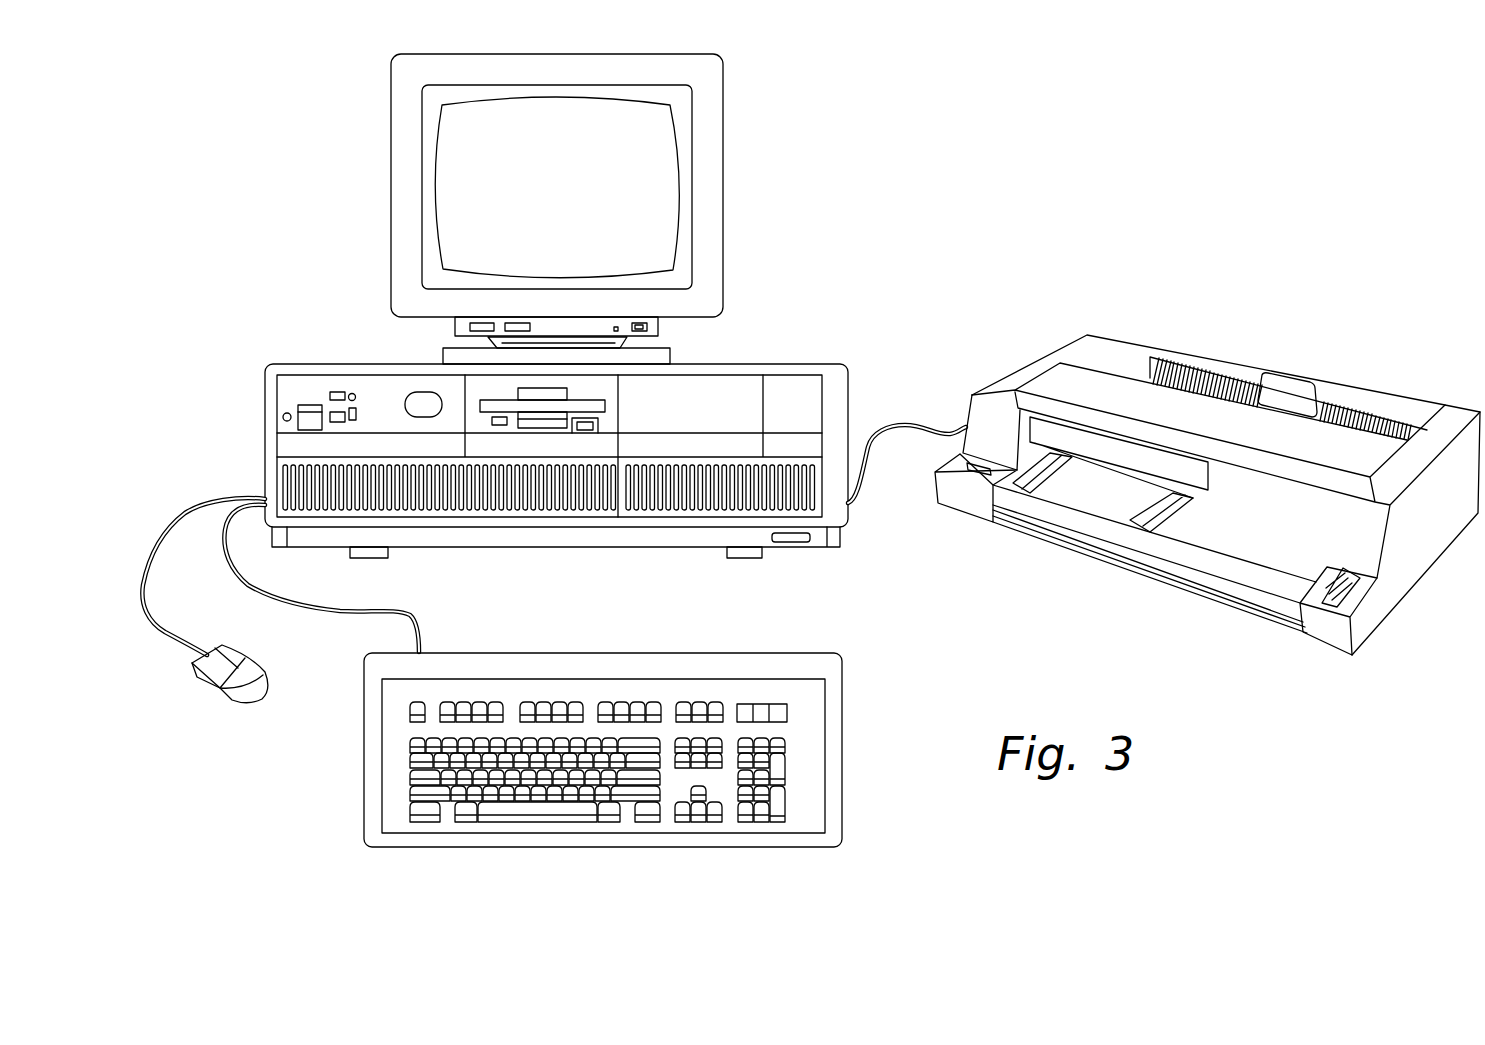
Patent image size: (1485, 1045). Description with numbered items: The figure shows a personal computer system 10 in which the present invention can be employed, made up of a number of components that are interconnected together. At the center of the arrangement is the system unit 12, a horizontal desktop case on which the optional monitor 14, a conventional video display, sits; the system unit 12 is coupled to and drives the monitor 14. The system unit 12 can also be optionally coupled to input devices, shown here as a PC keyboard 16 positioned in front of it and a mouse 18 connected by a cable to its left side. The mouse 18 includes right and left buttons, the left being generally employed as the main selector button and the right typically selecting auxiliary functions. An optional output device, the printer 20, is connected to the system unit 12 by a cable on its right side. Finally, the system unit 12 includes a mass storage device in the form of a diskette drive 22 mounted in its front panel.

The personal computer system 10 is at (952, 188).
The system unit 12 is at (560, 436).
The monitor 14 is at (733, 240).
The PC keyboard 16 is at (680, 645).
The mouse 18 is at (220, 689).
The printer 20 is at (997, 361).
The diskette drive 22 is at (538, 418).